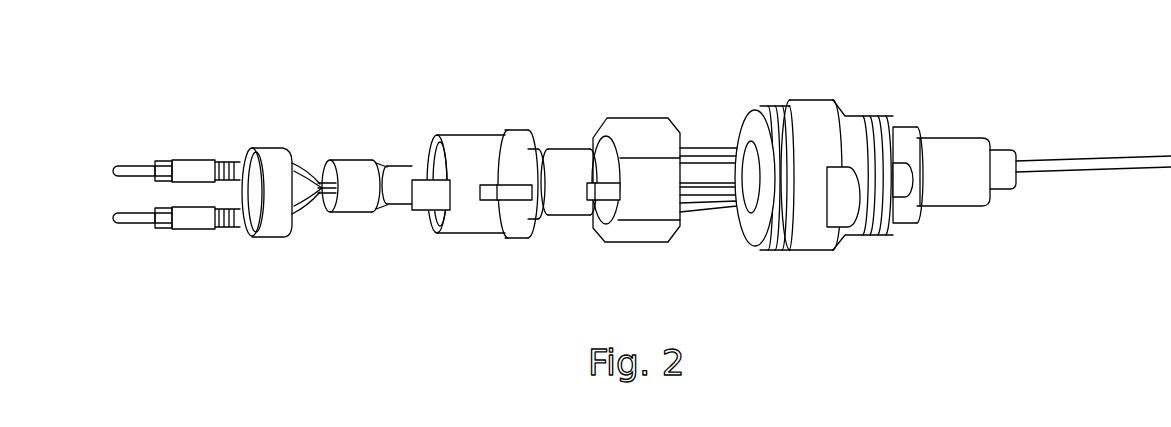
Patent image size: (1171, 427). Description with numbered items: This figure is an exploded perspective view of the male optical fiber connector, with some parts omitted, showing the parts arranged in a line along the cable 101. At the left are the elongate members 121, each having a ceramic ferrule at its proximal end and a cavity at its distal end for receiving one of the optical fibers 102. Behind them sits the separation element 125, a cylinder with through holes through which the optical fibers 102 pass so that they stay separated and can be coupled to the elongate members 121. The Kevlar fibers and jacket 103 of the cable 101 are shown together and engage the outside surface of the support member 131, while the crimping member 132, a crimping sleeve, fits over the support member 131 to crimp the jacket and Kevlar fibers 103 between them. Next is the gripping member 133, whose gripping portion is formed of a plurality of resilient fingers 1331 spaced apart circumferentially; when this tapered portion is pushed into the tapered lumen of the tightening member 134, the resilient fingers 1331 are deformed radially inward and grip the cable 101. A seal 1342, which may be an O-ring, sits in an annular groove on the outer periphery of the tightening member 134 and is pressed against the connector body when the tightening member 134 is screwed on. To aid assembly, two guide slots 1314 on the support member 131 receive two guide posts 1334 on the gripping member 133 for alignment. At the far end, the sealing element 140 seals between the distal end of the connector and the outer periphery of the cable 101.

The cable 101 is at (1003, 160).
The optical fibers 102 is at (302, 170).
The Kevlar fibers and jacket 103 is at (353, 167).
The elongate members 121 is at (188, 166).
The separation element 125 is at (270, 168).
The support member 131 is at (478, 180).
The guide slots 1314 is at (505, 195).
The crimping member 132 is at (562, 153).
The gripping member 133 is at (663, 162).
The resilient fingers 1331 is at (702, 153).
The guide posts 1334 is at (595, 212).
The tightening member 134 is at (829, 168).
The seal 1342 is at (802, 236).
The sealing element 140 is at (942, 150).